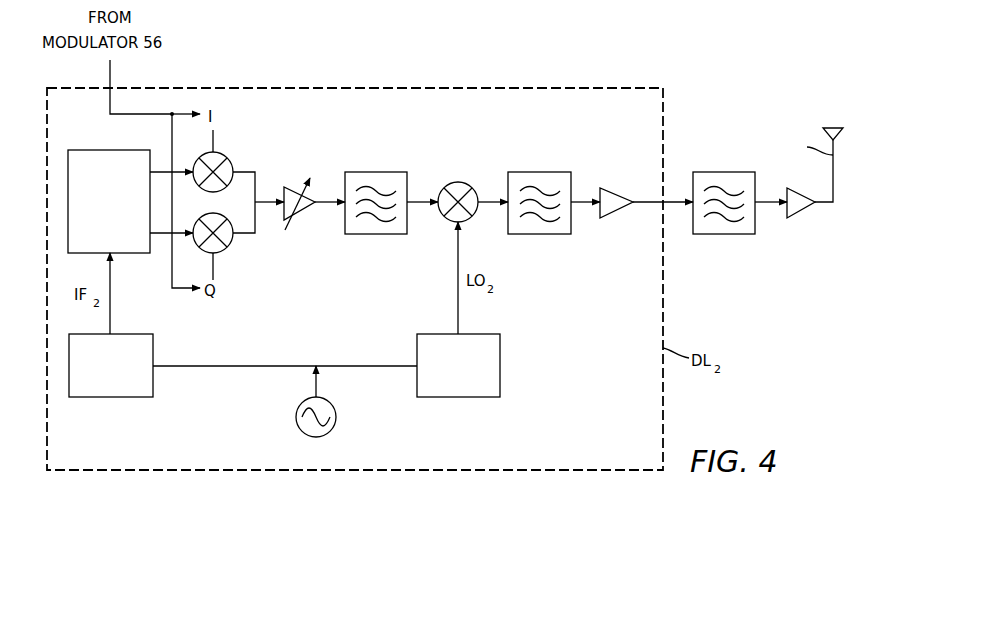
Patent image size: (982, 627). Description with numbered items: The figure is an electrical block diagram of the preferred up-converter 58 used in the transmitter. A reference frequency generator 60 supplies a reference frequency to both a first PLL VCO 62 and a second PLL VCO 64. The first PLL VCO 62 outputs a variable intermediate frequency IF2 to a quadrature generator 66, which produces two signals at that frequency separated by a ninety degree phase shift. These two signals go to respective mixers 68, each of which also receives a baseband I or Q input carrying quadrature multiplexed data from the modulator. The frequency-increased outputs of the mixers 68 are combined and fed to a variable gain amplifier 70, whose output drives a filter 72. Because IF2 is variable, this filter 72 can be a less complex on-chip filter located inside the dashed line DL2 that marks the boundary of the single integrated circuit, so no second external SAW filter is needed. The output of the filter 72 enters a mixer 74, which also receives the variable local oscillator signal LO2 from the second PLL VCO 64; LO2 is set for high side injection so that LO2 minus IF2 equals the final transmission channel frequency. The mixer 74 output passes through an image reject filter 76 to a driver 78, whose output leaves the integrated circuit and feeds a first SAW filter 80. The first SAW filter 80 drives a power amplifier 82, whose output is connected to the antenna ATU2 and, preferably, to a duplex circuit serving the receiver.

The up-converter 58 is at (712, 69).
The reference frequency generator 60 is at (336, 418).
The first PLL VCO 62 is at (110, 397).
The second PLL VCO 64 is at (458, 397).
The quadrature generator 66 is at (94, 150).
The mixers 68 is at (244, 285).
The variable gain amplifier 70 is at (300, 222).
The filter 72 is at (376, 172).
The mixer 74 is at (460, 182).
The image reject filter 76 is at (540, 172).
The driver 78 is at (618, 216).
The first SAW filter 80 is at (724, 234).
The power amplifier 82 is at (803, 214).